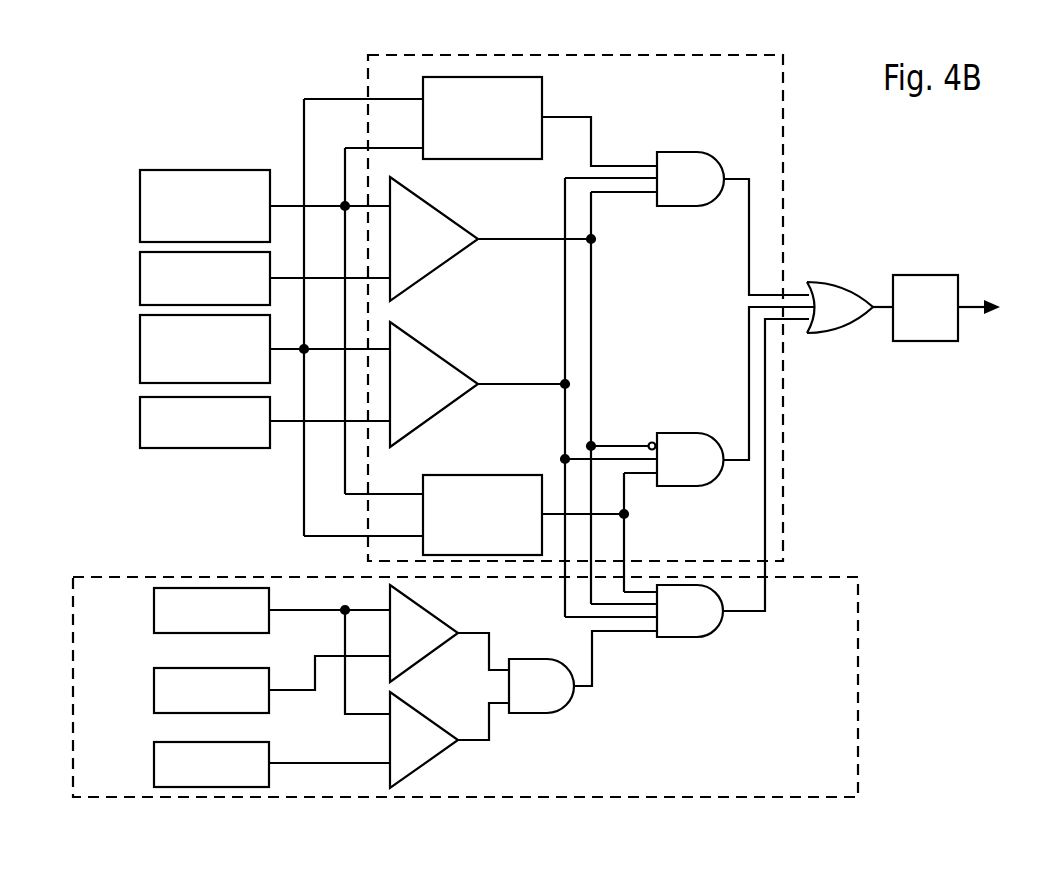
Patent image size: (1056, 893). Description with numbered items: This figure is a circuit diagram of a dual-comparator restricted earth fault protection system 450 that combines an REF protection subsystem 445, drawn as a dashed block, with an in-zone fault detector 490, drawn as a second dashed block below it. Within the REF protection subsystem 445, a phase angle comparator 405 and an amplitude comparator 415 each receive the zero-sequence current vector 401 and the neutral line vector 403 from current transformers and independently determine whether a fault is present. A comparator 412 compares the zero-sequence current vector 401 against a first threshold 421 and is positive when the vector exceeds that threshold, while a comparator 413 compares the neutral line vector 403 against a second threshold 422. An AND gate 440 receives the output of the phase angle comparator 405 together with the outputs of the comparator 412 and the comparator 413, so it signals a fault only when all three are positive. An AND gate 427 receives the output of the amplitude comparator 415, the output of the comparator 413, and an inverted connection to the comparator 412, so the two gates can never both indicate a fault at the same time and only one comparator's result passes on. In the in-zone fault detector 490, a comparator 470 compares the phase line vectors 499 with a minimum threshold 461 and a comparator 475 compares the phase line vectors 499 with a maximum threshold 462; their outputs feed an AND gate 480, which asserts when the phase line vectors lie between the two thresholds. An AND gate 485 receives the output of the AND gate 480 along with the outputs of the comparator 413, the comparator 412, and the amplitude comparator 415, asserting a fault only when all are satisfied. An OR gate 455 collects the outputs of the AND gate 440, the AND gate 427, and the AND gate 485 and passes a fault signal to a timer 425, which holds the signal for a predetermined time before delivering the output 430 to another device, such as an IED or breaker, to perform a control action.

The REF protection system 450 is at (228, 80).
The REF protection subsystem 445 is at (783, 165).
The in-zone fault detector 490 is at (858, 570).
The zero-sequence current vector 401 is at (140, 199).
The first threshold 421 is at (140, 270).
The neutral line vector 403 is at (140, 347).
The second threshold 422 is at (140, 414).
The phase angle comparator 405 is at (542, 92).
The comparator 412 is at (433, 207).
The comparator 413 is at (433, 352).
The amplitude comparator 415 is at (485, 475).
The AND gate 440 is at (690, 152).
The AND gate 427 is at (690, 433).
The AND gate 485 is at (690, 637).
The AND gate 480 is at (558, 659).
The comparator 470 is at (440, 648).
The comparator 475 is at (435, 723).
The OR gate 455 is at (838, 283).
The timer 425 is at (925, 275).
The output 430 is at (984, 300).
The phase line vectors 499 is at (154, 609).
The minimum threshold 461 is at (154, 689).
The maximum threshold 462 is at (154, 762).